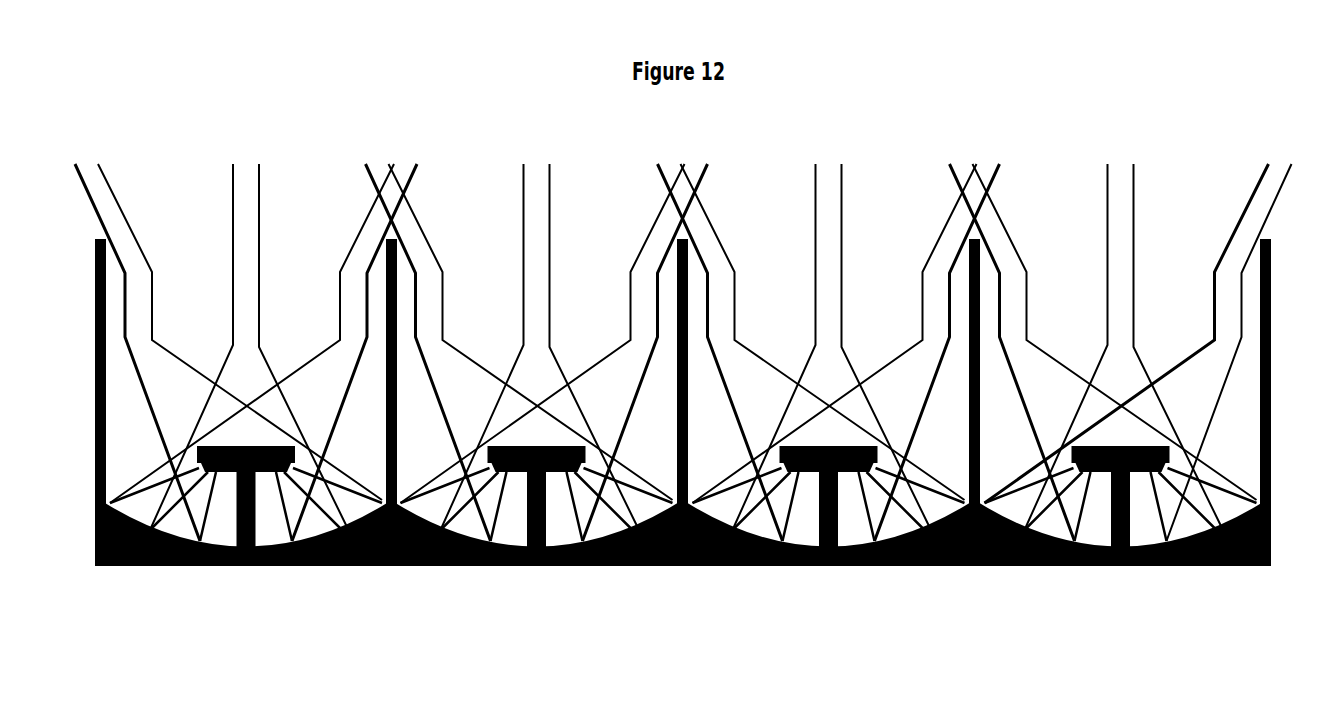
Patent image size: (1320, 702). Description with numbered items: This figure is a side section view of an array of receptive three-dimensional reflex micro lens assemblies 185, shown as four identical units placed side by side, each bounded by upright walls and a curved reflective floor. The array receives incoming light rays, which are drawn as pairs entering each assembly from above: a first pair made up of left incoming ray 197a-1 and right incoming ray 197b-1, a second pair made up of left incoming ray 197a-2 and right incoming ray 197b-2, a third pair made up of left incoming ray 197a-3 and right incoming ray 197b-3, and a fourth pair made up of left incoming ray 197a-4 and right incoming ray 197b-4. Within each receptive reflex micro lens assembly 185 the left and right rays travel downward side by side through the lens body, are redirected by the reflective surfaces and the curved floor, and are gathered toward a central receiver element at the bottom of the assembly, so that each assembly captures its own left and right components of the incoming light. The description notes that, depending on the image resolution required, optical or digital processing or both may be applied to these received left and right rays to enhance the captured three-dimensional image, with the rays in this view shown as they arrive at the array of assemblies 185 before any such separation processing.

The receptive 3D-RML assembly 185 is at (674, 414).
The left incoming light ray 197a-1 is at (232, 203).
The right incoming light ray 197b-1 is at (259, 203).
The left incoming light ray 197a-2 is at (519, 222).
The right incoming light ray 197b-2 is at (549, 222).
The left incoming light ray 197a-3 is at (809, 182).
The right incoming light ray 197b-3 is at (842, 187).
The left incoming light ray 197a-4 is at (1102, 200).
The right incoming light ray 197b-4 is at (1131, 200).